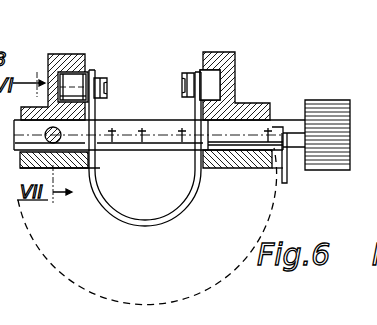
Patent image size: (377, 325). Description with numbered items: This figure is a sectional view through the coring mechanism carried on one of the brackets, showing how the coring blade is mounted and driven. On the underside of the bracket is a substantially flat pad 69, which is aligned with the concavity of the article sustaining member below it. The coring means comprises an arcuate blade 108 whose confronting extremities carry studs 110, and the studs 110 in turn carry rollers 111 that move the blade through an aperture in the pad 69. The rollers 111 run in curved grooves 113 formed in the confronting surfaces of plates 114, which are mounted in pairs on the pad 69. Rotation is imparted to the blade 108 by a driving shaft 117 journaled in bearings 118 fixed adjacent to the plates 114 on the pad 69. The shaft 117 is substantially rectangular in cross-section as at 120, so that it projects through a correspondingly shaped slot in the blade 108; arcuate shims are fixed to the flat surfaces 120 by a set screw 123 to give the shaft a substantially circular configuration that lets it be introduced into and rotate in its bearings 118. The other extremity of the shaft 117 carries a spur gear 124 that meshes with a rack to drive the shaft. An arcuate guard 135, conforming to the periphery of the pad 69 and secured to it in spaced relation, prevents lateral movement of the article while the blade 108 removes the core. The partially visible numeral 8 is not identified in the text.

The driving shaft 117 is at (245, 127).
The plate 114 is at (88, 62).
The roller 111 is at (73, 72).
The stud 110 is at (204, 80).
The curved groove 113 is at (212, 52).
The bearing 118 is at (257, 105).
The arcuate blade 108 is at (184, 200).
The pad 69 is at (220, 162).
The set screw 123 is at (55, 137).
The rectangular cross-section portion 120 is at (168, 130).
The spur gear 124 is at (323, 100).
The arcuate guard 135 is at (288, 175).
The frame 8 is at (30, 108).